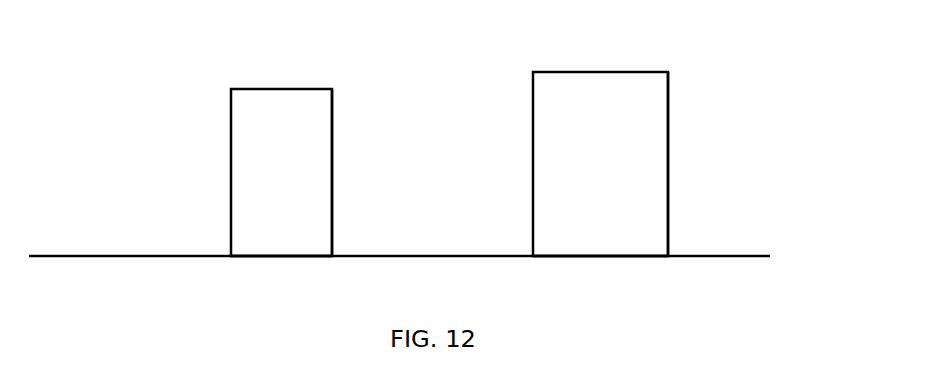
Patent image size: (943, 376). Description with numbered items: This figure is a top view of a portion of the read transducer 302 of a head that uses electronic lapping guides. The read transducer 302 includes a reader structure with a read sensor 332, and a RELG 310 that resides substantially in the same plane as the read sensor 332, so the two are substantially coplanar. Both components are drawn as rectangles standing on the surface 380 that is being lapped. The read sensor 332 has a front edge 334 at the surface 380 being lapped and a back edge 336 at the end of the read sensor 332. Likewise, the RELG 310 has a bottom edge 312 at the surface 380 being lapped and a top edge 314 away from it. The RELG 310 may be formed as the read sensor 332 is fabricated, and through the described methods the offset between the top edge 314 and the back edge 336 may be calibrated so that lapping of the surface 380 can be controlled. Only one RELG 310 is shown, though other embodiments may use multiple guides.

The read transducer 302 is at (453, 33).
The surface being lapped 380 is at (796, 256).
The back edge 336 is at (209, 87).
The read sensor 332 is at (333, 228).
The front edge 334 is at (266, 271).
The top edge 314 is at (511, 71).
The RELG 310 is at (669, 173).
The bottom edge 312 is at (618, 272).